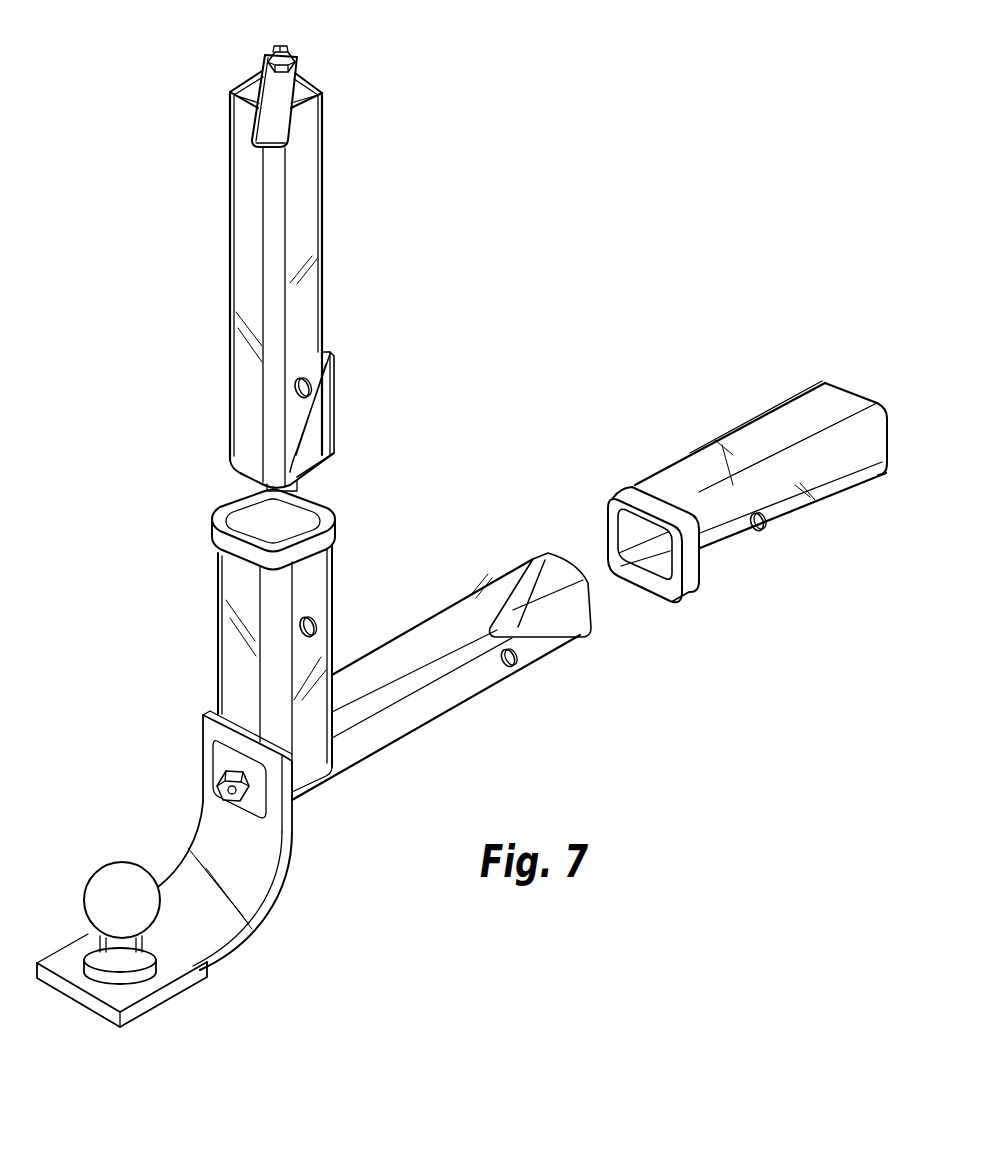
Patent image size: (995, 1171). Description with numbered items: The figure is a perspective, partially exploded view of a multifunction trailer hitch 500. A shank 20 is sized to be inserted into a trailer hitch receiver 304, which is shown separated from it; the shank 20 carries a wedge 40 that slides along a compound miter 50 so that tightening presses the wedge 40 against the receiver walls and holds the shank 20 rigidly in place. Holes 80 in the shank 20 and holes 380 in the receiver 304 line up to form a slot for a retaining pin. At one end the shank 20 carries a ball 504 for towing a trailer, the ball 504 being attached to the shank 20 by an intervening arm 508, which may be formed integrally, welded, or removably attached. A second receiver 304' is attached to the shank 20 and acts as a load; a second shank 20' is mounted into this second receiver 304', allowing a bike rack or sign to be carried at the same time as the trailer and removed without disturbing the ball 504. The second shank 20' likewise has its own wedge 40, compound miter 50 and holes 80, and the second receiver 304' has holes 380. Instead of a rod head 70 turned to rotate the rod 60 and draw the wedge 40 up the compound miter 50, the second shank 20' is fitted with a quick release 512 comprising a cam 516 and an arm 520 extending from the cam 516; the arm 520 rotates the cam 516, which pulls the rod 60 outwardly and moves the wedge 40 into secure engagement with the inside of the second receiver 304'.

The multifunction trailer hitch 500 is at (538, 310).
The shank 20 is at (436, 678).
The second shank 20' is at (303, 281).
The wedge 40 is at (313, 453).
The compound miter 50 is at (309, 432).
The holes 80 is at (304, 381).
The trailer hitch receiver 304 is at (747, 484).
The second receiver 304' is at (248, 641).
The holes 380 is at (760, 532).
The quick release 512 is at (270, 97).
The cam 516 is at (297, 62).
The arm 520 is at (262, 128).
The rod head 70 is at (214, 757).
The rod 60 is at (214, 788).
The arm 508 is at (257, 885).
The ball 504 is at (108, 882).